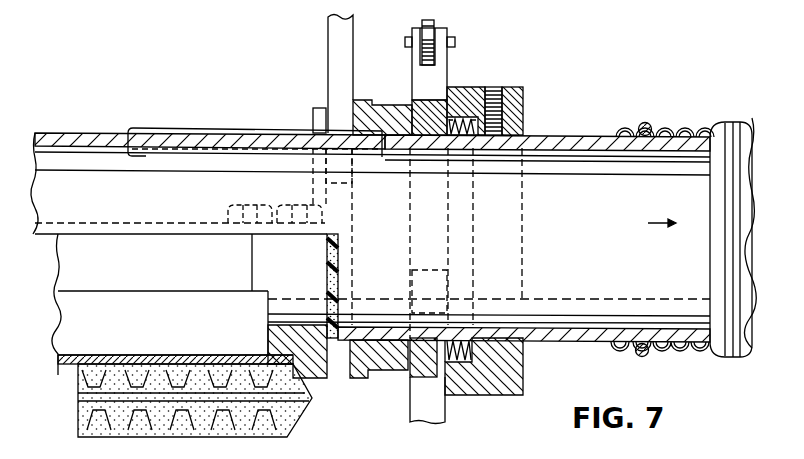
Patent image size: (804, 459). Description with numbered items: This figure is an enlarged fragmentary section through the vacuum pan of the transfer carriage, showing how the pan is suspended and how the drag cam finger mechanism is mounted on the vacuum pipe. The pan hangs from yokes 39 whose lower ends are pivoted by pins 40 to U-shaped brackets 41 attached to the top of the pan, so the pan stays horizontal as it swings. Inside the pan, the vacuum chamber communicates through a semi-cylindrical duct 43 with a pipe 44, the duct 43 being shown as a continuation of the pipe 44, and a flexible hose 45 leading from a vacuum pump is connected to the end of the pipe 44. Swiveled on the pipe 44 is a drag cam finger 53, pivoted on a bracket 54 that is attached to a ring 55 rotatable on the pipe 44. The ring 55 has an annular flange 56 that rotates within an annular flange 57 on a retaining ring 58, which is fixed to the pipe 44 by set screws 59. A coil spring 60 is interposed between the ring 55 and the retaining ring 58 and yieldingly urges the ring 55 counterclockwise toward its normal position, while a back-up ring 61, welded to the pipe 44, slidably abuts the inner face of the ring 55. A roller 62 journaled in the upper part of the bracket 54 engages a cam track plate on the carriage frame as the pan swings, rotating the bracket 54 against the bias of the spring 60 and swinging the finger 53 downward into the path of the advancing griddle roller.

The yoke 39 is at (328, 40).
The pin 40 is at (215, 133).
The U-shaped bracket 41 is at (322, 110).
The semi-cylindrical duct 43 is at (66, 133).
The pipe 44 is at (556, 139).
The flexible hose 45 is at (712, 124).
The drag cam finger 53 is at (440, 410).
The bracket 54 is at (440, 78).
The ring 55 is at (412, 102).
The annular flange 56 is at (463, 108).
The annular flange 57 is at (468, 395).
The retaining ring 58 is at (524, 372).
The set screw 59 is at (500, 106).
The coil spring 60 is at (470, 140).
The back-up ring 61 is at (383, 373).
The roller 62 is at (430, 21).